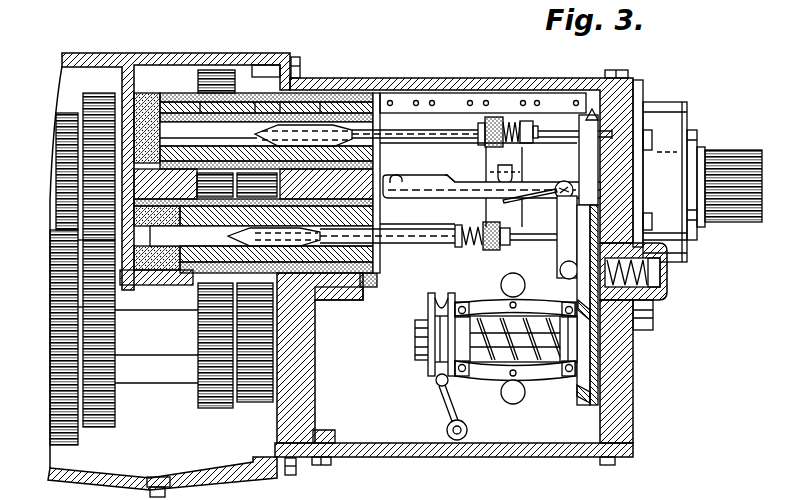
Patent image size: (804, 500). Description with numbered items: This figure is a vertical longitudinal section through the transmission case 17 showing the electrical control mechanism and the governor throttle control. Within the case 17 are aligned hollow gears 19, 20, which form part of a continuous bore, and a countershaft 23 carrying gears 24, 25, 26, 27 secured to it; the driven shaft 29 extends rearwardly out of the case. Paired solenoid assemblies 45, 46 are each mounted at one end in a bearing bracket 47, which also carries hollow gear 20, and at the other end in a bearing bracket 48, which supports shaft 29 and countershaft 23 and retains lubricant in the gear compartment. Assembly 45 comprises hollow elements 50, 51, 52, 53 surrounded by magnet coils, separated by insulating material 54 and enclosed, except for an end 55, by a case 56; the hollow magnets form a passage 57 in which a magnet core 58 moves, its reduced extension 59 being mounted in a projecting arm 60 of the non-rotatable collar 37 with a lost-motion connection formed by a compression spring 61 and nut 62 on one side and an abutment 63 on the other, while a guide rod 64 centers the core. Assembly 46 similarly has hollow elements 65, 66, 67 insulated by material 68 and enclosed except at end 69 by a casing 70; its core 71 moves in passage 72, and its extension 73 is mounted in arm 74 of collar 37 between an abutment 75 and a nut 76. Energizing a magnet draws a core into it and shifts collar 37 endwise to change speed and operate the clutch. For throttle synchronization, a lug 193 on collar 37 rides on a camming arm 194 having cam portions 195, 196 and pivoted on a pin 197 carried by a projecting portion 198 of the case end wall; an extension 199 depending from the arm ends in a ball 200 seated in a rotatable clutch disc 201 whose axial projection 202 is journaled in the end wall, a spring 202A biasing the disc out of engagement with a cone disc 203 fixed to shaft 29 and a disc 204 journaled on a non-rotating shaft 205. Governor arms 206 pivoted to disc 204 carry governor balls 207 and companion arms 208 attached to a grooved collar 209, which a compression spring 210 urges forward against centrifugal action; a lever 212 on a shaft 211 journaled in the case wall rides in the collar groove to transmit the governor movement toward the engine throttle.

The transmission case 17 is at (92, 54).
The hollow gear 19 is at (63, 113).
The hollow gear 20 is at (96, 94).
The countershaft 23 is at (156, 384).
The gear 24 is at (50, 418).
The gear 25 is at (100, 428).
The gear 26 is at (208, 410).
The gear 27 is at (247, 403).
The power take-off shaft 29 is at (706, 151).
The non-rotatable collar 37 is at (522, 155).
The solenoid assembly 45 is at (338, 96).
The solenoid assembly 46 is at (350, 300).
The bearing bracket 47 is at (158, 280).
The bearing bracket 48 is at (313, 370).
The hollow element 50 is at (173, 95).
The hollow element 51 is at (243, 107).
The hollow element 52 is at (314, 103).
The hollow element 53 is at (362, 92).
The insulating material 54 is at (143, 93).
The end 55 is at (380, 161).
The case 56 is at (197, 102).
The passage 57 is at (212, 120).
The magnet core 58 is at (290, 127).
The reduced extension 59 is at (428, 132).
The projecting arm 60 is at (490, 117).
The compression spring 61 is at (512, 122).
The nut 62 is at (535, 128).
The abutment 63 is at (484, 124).
The guide rod 64 is at (196, 139).
The hollow element 65 is at (172, 320).
The hollow element 66 is at (288, 272).
The hollow element 67 is at (380, 282).
The insulating material 68 is at (380, 259).
The end 69 is at (380, 222).
The casing 70 is at (130, 280).
The magnet core 71 is at (330, 300).
The passage 72 is at (212, 235).
The extension 73 is at (425, 246).
The arm 74 is at (488, 250).
The abutment 75 is at (466, 247).
The nut 76 is at (507, 228).
The lug 193 is at (513, 172).
The camming arm 194 is at (448, 199).
The cam portion 195 is at (452, 181).
The cam portion 196 is at (394, 182).
The pin 197 is at (552, 201).
The projecting portion 198 is at (564, 181).
The extension 199 is at (557, 257).
The ball portion 200 is at (567, 278).
The clutch disc 201 is at (654, 322).
The axial projection 202 is at (648, 307).
The spring 202A is at (664, 273).
The cone disc 203 is at (606, 120).
The disc 204 is at (586, 403).
The shaft 205 is at (500, 378).
The governor arms 206 is at (535, 377).
The governor balls 207 is at (511, 404).
The companion arms 208 is at (478, 376).
The grooved collar 209 is at (430, 368).
The compression spring 210 is at (497, 285).
The shaft 211 is at (447, 430).
The lever 212 is at (446, 407).